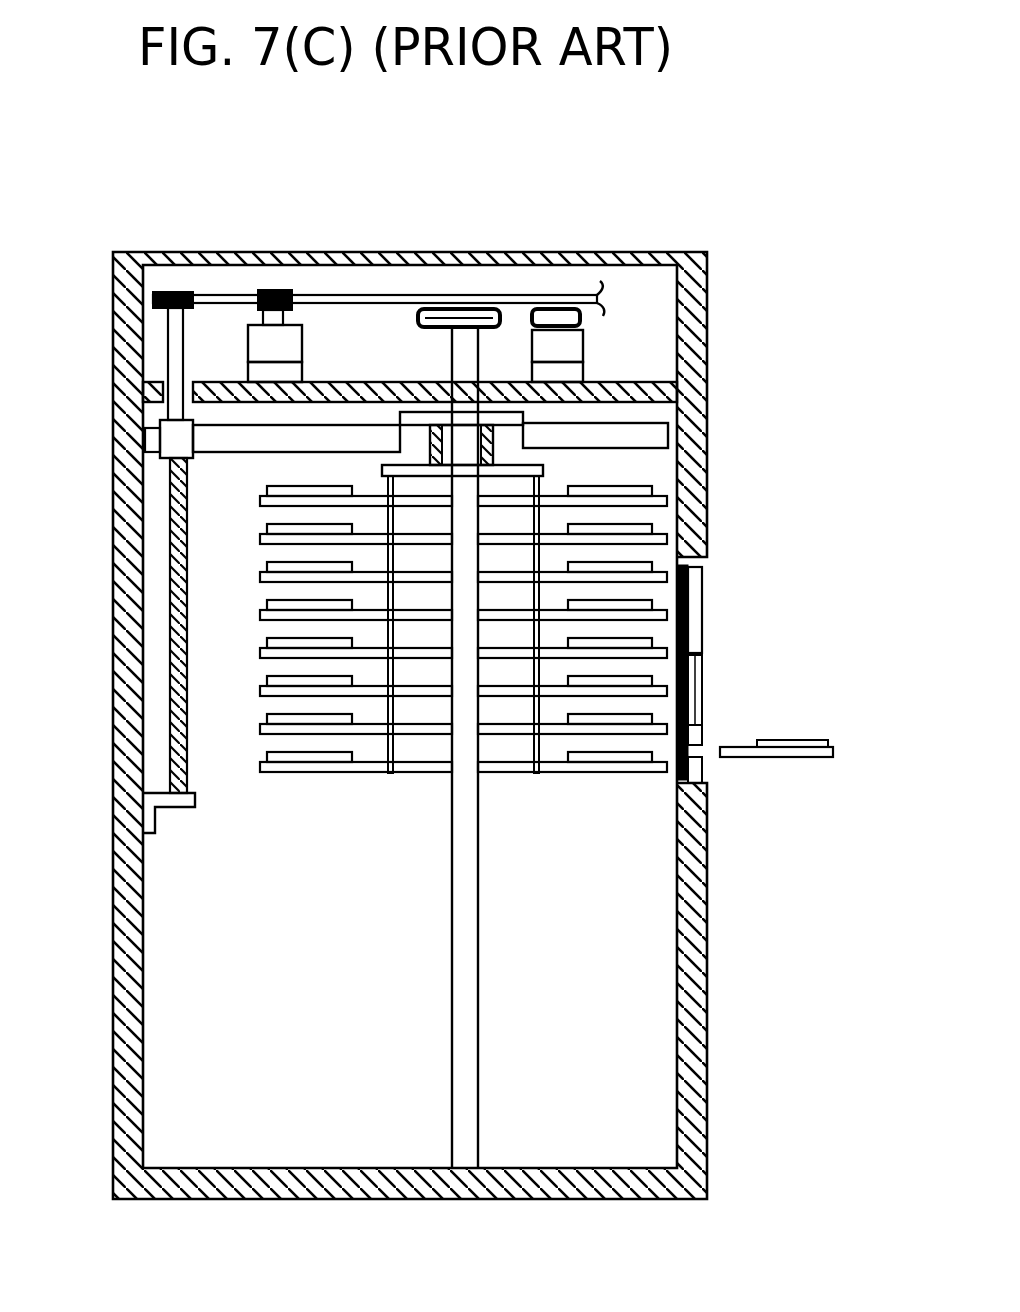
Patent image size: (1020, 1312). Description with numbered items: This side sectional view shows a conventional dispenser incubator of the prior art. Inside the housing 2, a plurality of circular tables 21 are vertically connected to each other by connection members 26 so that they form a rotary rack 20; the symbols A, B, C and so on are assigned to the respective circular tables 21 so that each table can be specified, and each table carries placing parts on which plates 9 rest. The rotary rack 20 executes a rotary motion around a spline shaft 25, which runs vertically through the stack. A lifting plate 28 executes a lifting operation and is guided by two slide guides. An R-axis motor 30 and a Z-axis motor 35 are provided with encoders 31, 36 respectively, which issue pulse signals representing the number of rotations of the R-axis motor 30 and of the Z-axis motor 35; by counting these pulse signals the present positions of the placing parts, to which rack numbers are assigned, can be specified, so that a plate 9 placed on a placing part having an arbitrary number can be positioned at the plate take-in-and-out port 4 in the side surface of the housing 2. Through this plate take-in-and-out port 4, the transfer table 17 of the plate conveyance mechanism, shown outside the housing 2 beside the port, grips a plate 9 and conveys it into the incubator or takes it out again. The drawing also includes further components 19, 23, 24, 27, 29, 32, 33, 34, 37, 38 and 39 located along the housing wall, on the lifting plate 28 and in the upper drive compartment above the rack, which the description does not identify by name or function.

The housing 2 is at (697, 410).
The plate take-in-and-out port 4 is at (692, 745).
The plate 9 is at (290, 758).
The transfer table 17 is at (808, 745).
The door 19 is at (697, 602).
The rotary rack 20 is at (517, 686).
The circular tables 21 is at (598, 765).
The guide column 23 is at (168, 557).
The bracket 24 is at (167, 432).
The spline shaft 25 is at (472, 998).
The connection members 26 is at (393, 748).
The coupling 27 is at (437, 420).
The lifting plate 28 is at (662, 440).
The motor 29 is at (577, 350).
The R-axis motor 30 is at (630, 382).
The encoder 31 is at (582, 370).
The belt end hook 32 is at (575, 293).
The small pulley 33 is at (522, 318).
The large pulley 34 is at (462, 312).
The Z-axis motor 35 is at (260, 340).
The encoder 36 is at (302, 371).
The motor stem 37 is at (280, 290).
The lift rod 38 is at (173, 292).
The horizontal rod 39 is at (358, 295).